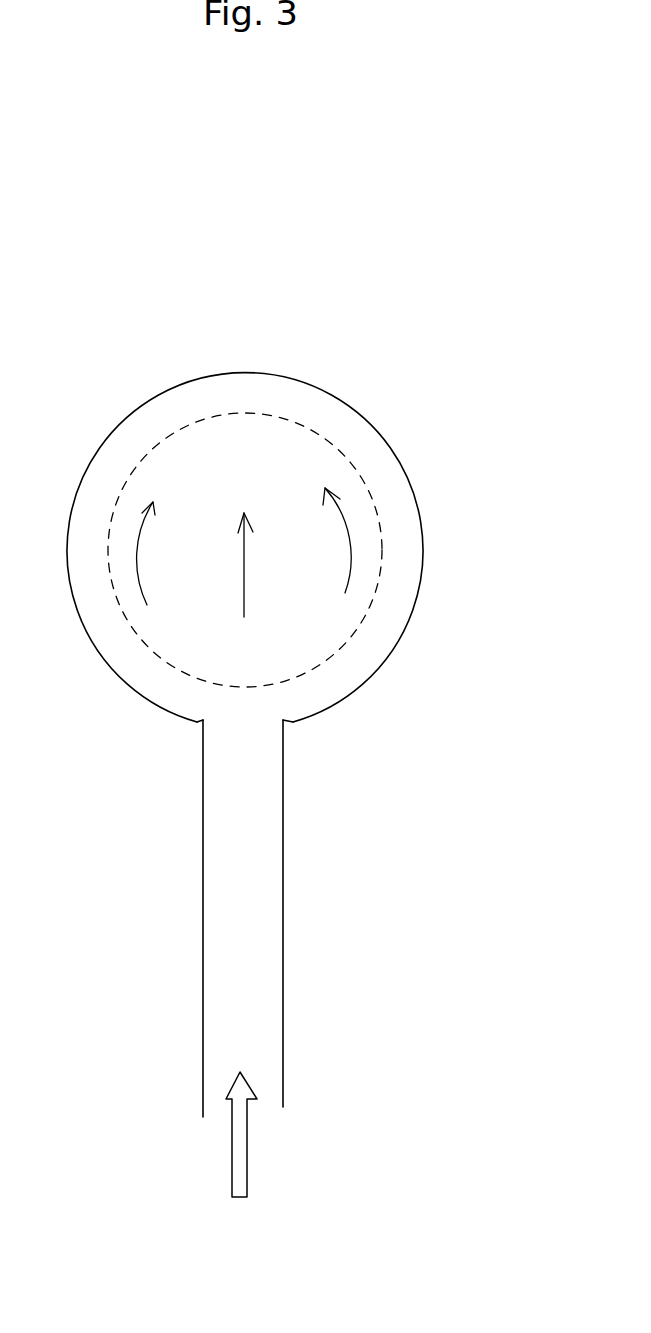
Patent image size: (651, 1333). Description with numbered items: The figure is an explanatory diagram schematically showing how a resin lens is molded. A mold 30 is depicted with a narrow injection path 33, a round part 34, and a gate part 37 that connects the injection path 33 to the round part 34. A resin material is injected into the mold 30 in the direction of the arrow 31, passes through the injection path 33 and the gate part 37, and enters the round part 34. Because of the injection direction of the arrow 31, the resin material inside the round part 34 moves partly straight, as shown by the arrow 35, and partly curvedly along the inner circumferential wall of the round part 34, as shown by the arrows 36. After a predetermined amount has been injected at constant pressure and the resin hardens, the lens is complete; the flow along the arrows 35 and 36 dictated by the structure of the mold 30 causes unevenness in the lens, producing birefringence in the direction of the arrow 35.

The mold 30 is at (277, 305).
The arrow 31 is at (247, 1155).
The injection path 33 is at (265, 948).
The round part 34 is at (417, 564).
The arrow 35 is at (247, 553).
The arrows 36 is at (147, 604).
The gate part 37 is at (243, 738).